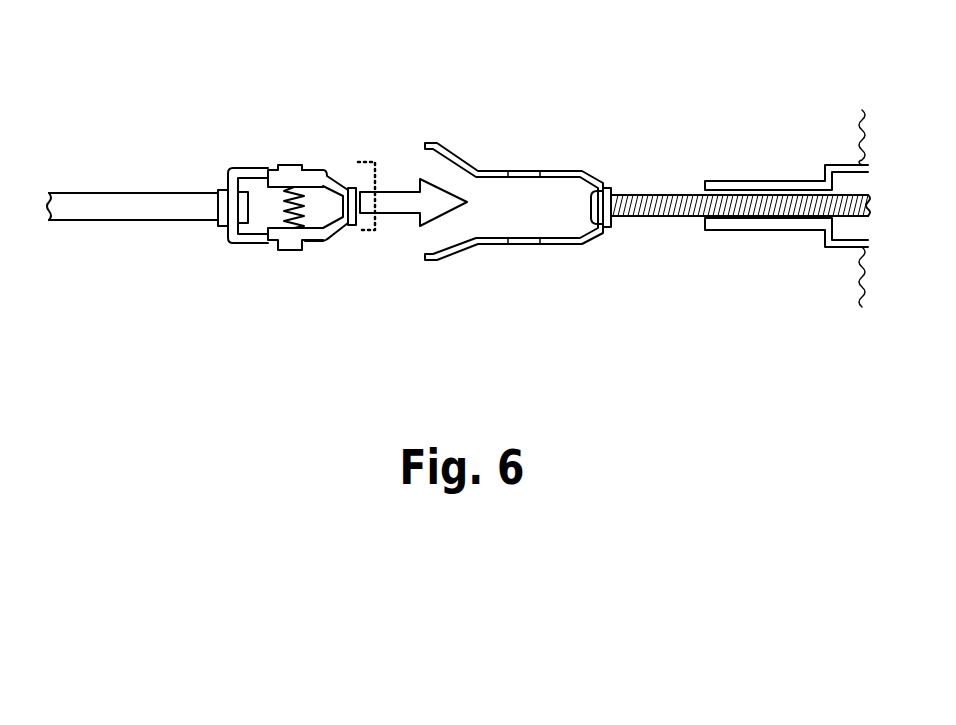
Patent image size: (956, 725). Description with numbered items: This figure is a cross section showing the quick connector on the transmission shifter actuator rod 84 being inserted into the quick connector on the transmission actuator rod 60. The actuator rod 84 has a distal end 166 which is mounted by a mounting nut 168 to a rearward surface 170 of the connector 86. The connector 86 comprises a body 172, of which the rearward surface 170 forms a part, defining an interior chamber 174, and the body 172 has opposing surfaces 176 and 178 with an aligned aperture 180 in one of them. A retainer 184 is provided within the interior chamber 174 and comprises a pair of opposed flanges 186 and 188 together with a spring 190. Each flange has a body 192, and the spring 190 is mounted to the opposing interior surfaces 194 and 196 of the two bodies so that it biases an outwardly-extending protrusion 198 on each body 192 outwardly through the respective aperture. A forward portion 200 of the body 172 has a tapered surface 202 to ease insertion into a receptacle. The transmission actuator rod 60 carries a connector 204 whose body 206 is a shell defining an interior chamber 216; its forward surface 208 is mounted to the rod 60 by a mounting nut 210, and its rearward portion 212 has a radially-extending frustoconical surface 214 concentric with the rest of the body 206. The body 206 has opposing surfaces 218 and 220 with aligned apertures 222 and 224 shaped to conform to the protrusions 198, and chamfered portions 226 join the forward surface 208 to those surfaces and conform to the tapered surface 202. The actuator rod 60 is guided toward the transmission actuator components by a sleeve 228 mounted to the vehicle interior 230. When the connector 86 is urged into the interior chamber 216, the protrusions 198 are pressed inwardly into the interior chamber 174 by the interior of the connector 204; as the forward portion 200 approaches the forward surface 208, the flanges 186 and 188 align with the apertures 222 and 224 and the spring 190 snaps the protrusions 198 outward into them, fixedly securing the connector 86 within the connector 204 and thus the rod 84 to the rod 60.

The transmission actuator rod 60 is at (686, 192).
The actuator rod 84 is at (130, 224).
The connector 86 is at (362, 153).
The distal end 166 is at (222, 227).
The mounting nut 168 is at (218, 189).
The rearward surface 170 is at (227, 177).
The body 172 is at (268, 168).
The interior chamber 174 is at (268, 214).
The opposing surface 176 is at (323, 177).
The opposing surface 178 is at (323, 243).
The aperture 180 is at (275, 170).
The retainer 184 is at (373, 229).
The flange 186 is at (294, 163).
The flange 188 is at (297, 253).
The spring 190 is at (377, 171).
The body 192 is at (250, 168).
The interior surface 194 is at (303, 200).
The interior surface 196 is at (268, 230).
The protrusion 198 is at (307, 170).
The forward portion 200 is at (377, 173).
The tapered surface 202 is at (341, 231).
The connector 204 is at (522, 153).
The body 206 is at (597, 179).
The forward surface 208 is at (598, 233).
The mounting nut 210 is at (590, 203).
The rearward portion 212 is at (480, 170).
The frustoconical surface 214 is at (452, 151).
The interior chamber 216 is at (504, 212).
The opposing surface 218 is at (583, 168).
The opposing surface 220 is at (562, 246).
The aperture 222 is at (518, 171).
The aperture 224 is at (523, 245).
The chamfered portion 226 is at (601, 188).
The sleeve 228 is at (747, 181).
The vehicle interior 230 is at (858, 130).